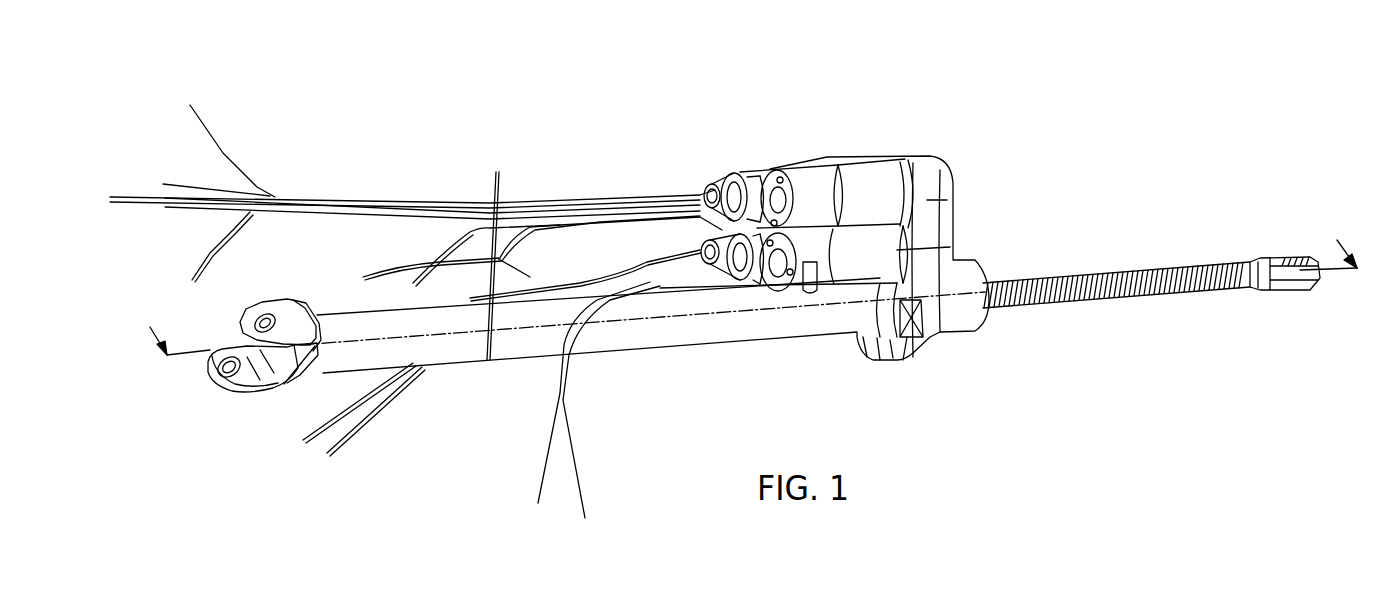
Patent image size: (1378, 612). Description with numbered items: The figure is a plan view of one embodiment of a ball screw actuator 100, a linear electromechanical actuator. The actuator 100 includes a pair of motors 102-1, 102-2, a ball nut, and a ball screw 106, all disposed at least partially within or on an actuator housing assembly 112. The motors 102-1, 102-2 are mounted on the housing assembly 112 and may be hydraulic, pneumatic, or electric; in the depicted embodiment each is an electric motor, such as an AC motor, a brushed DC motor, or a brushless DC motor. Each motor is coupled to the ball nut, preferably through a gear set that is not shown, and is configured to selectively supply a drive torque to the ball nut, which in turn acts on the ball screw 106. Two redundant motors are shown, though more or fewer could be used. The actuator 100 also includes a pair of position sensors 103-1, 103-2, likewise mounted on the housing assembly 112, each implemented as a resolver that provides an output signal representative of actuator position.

The ball screw actuator 100 is at (952, 81).
The motor 102-1 is at (940, 247).
The motor 102-2 is at (735, 238).
The position sensor 103-1 is at (878, 183).
The position sensor 103-2 is at (832, 165).
The ball screw 106 is at (1095, 298).
The actuator housing assembly 112 is at (703, 352).